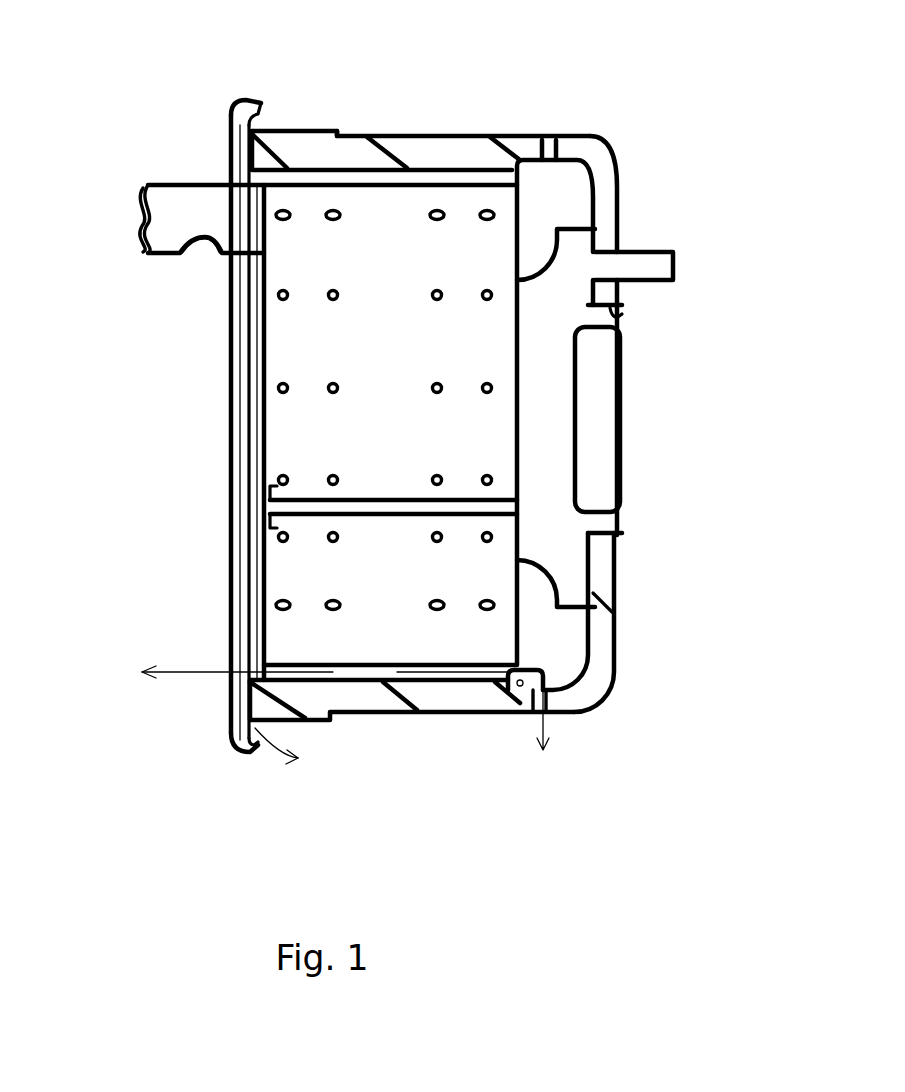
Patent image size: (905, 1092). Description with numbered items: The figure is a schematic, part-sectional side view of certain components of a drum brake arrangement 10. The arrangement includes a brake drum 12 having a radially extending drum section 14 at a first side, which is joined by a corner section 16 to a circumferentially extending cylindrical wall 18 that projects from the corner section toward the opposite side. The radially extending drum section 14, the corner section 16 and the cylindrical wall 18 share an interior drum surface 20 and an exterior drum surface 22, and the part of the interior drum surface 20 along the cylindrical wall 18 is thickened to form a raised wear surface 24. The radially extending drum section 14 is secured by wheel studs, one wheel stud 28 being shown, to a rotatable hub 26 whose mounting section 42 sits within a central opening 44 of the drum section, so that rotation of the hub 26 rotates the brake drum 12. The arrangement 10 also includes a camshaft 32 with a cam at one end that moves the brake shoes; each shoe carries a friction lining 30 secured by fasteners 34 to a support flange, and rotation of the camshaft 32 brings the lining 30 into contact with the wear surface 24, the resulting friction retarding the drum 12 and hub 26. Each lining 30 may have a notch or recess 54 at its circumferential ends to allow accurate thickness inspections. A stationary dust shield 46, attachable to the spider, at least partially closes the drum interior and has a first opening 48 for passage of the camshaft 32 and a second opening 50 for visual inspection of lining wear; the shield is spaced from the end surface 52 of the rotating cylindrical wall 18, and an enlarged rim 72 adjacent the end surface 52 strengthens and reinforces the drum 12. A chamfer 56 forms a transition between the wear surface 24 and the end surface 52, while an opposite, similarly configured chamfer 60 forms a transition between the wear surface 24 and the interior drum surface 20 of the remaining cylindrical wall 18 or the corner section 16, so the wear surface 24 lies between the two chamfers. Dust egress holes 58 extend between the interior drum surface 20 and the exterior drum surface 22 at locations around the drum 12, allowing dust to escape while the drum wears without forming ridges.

The drum brake arrangement 10 is at (505, 107).
The brake drum 12 is at (435, 700).
The radially extending drum section 14 is at (607, 233).
The corner section 16 is at (595, 160).
The cylindrical wall 18 is at (430, 152).
The interior drum surface 20 is at (592, 637).
The exterior drum surface 22 is at (615, 580).
The raised wear surface 24 is at (352, 175).
The rotatable hub 26 is at (552, 415).
The wheel stud 28 is at (652, 267).
The friction lining 30 is at (283, 353).
The camshaft 32 is at (170, 182).
The fasteners 34 is at (277, 477).
The mounting section 42 is at (610, 520).
The central opening 44 is at (620, 313).
The dust shield 46 is at (237, 745).
The first opening 48 is at (175, 257).
The second opening 50 is at (230, 618).
The end surface 52 is at (230, 698).
The notch or recess 54 is at (270, 528).
The chamfer 56 is at (220, 155).
The dust egress holes 58 is at (555, 140).
The chamfer 60 is at (527, 715).
The enlarged rim 72 is at (306, 130).